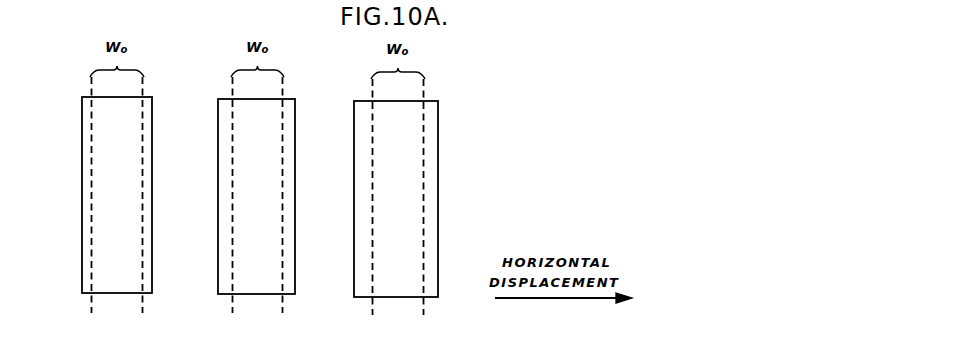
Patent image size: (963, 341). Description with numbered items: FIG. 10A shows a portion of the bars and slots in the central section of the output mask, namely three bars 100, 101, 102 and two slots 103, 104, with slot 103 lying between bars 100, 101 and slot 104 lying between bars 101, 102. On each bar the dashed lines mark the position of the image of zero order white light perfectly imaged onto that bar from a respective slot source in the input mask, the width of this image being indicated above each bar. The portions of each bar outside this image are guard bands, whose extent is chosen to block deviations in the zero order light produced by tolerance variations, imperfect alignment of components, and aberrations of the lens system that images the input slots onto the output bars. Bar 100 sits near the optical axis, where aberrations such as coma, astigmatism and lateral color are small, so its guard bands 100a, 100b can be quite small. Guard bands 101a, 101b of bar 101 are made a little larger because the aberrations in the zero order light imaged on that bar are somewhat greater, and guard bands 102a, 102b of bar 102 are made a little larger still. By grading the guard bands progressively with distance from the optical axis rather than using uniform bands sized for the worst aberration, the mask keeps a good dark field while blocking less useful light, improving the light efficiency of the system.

The bar 100 is at (118, 278).
The guard band 100a is at (85, 205).
The guard band 100b is at (143, 208).
The bar 101 is at (257, 272).
The guard band 101a is at (222, 158).
The guard band 101b is at (284, 210).
The bar 102 is at (397, 278).
The guard band 102a is at (359, 166).
The guard band 102b is at (438, 204).
The slot 103 is at (183, 268).
The slot 104 is at (323, 275).